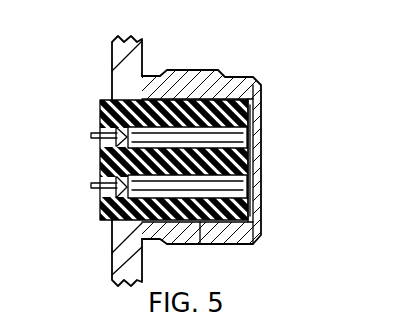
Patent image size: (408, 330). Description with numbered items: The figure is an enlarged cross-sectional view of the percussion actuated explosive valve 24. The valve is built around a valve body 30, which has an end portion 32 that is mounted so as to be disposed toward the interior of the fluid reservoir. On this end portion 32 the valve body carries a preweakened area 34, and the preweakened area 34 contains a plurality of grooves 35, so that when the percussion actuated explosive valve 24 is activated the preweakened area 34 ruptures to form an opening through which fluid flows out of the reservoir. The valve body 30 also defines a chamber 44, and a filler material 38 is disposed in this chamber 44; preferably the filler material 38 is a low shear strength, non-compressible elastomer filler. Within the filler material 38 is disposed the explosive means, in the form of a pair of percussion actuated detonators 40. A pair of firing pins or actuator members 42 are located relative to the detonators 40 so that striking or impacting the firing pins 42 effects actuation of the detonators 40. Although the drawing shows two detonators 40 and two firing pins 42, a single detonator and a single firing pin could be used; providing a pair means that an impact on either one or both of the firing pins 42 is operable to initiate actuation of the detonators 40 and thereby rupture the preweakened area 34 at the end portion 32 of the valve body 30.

The percussion actuated explosive valve 24 is at (204, 159).
The valve body 30 is at (186, 71).
The end portion 32 is at (259, 231).
The preweakened area 34 is at (253, 146).
The grooves 35 is at (253, 163).
The filler material 38 is at (107, 106).
The percussion actuated detonators 40 is at (251, 128).
The firing pins 42 is at (91, 185).
The chamber 44 is at (215, 218).